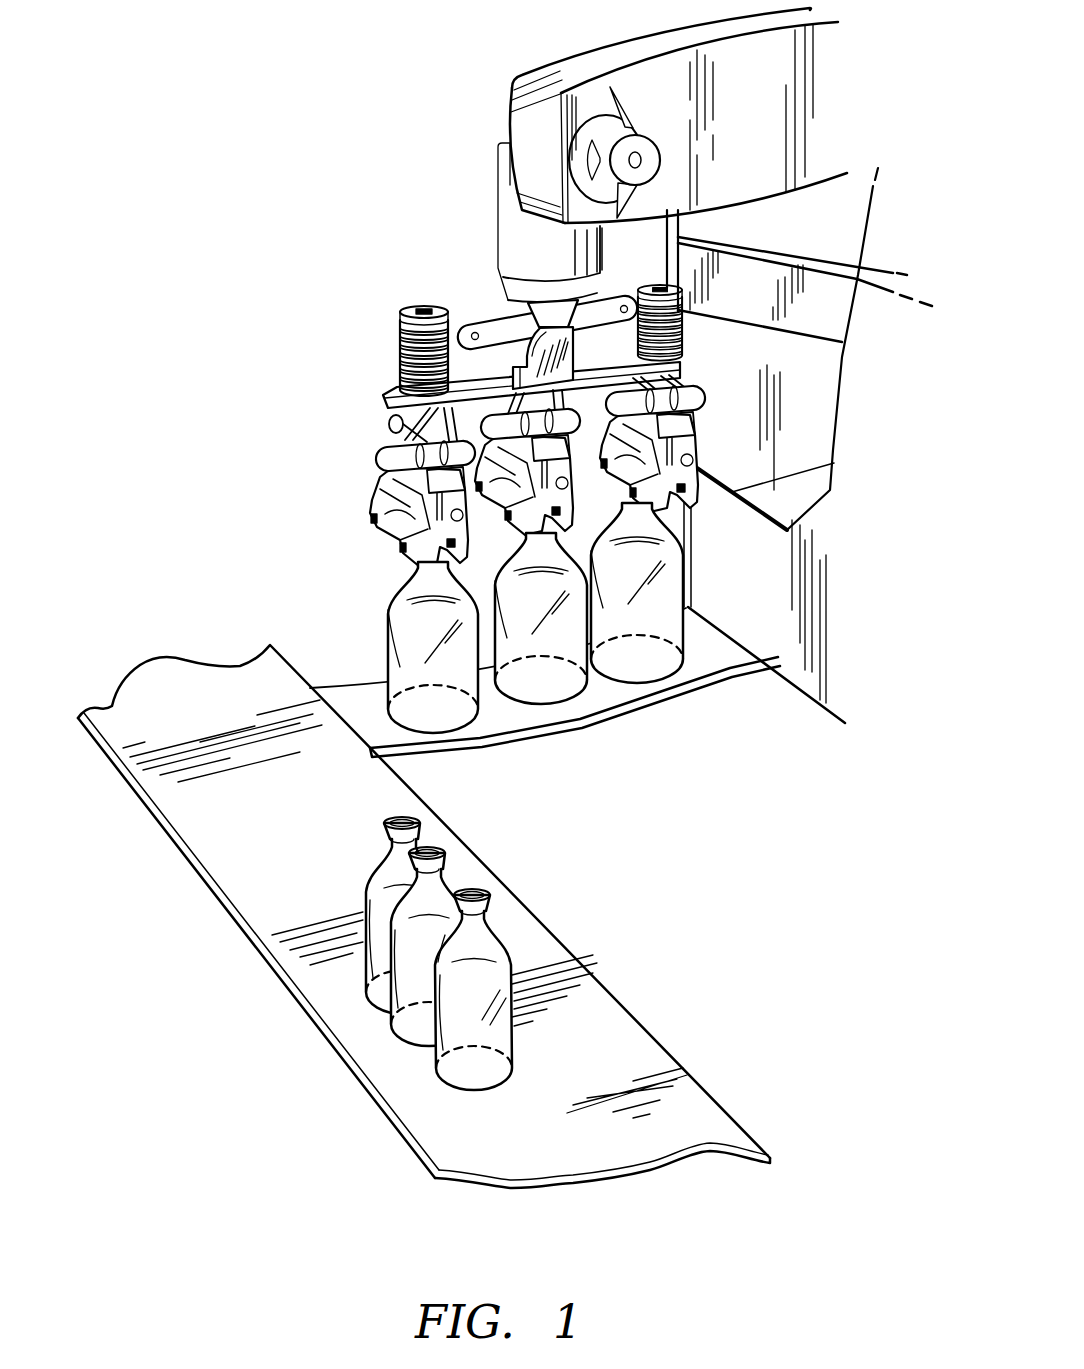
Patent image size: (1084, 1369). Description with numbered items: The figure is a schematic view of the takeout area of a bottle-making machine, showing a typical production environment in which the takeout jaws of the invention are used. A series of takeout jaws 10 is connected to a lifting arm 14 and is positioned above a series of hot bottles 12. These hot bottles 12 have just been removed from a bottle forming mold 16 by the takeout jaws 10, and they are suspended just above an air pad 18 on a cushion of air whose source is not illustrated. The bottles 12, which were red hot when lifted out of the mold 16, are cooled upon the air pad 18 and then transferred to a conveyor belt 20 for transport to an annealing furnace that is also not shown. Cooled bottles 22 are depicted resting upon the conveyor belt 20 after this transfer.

The takeout jaws 10 is at (352, 478).
The hot bottles 12 is at (354, 598).
The lifting arm 14 is at (460, 297).
The bottle forming mold 16 is at (842, 460).
The air pad 18 is at (603, 700).
The conveyor belt 20 is at (542, 952).
The cooled bottles 22 is at (430, 892).